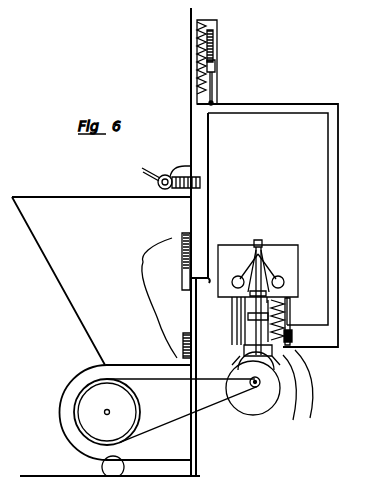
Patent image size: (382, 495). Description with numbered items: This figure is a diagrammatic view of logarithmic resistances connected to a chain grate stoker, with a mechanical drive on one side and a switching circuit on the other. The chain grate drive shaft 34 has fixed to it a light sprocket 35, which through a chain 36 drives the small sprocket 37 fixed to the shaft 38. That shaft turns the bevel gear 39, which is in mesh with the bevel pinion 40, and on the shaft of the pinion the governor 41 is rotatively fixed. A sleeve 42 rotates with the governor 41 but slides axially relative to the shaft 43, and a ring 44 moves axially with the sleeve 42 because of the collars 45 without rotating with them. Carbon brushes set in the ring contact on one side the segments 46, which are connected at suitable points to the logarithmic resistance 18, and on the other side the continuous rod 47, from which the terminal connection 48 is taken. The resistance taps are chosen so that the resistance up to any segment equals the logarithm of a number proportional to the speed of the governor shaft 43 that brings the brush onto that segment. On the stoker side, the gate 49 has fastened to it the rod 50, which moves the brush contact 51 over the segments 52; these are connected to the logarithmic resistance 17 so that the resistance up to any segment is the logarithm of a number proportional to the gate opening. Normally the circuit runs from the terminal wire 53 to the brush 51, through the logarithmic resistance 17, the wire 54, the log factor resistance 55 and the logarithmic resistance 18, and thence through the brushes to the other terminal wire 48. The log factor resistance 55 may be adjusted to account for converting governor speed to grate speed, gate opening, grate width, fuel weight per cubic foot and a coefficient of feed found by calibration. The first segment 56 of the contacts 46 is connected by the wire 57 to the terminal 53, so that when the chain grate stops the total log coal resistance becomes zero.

The logarithmic resistance 17 is at (196, 75).
The logarithmic resistance 18 is at (285, 316).
The chain grate drive shaft 34 is at (106, 413).
The light sprocket 35 is at (71, 420).
The chain 36 is at (198, 420).
The small sprocket 37 is at (256, 407).
The shaft 38 is at (280, 402).
The bevel gear 39 is at (300, 422).
The bevel pinion 40 is at (312, 418).
The governor 41 is at (270, 262).
The sleeve 42 is at (237, 298).
The shaft 43 is at (256, 264).
The ring 44 is at (246, 314).
The collars 45 is at (250, 319).
The segments 46 is at (284, 296).
The continuous rod 47 is at (241, 331).
The terminal connection 48 is at (240, 345).
The gate 49 is at (178, 318).
The rod 50 is at (210, 203).
The brush contact 51 is at (215, 50).
The segments 52 is at (218, 27).
The terminal wire 53 is at (214, 102).
The wire 54 is at (271, 114).
The log factor resistance 55 is at (291, 334).
The first segment 56 is at (286, 354).
The wire 57 is at (338, 277).